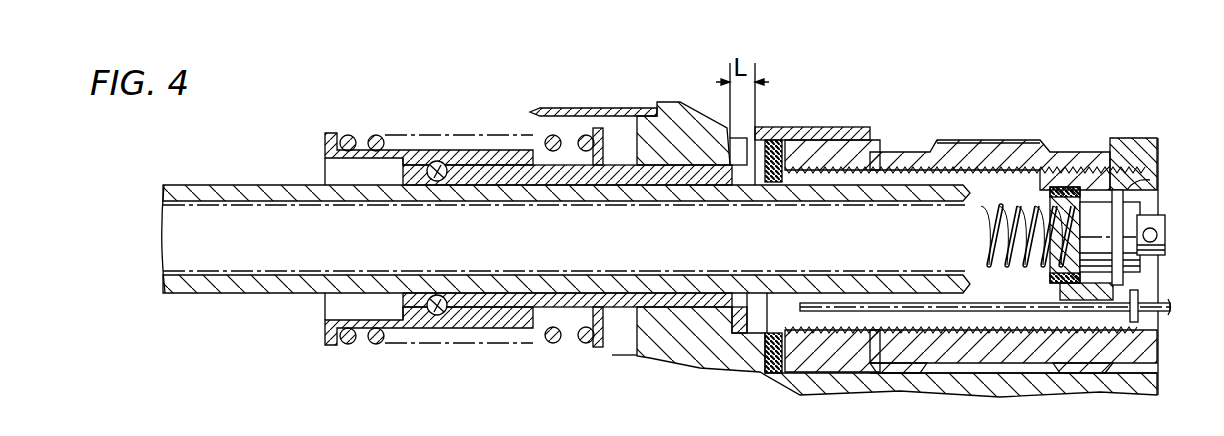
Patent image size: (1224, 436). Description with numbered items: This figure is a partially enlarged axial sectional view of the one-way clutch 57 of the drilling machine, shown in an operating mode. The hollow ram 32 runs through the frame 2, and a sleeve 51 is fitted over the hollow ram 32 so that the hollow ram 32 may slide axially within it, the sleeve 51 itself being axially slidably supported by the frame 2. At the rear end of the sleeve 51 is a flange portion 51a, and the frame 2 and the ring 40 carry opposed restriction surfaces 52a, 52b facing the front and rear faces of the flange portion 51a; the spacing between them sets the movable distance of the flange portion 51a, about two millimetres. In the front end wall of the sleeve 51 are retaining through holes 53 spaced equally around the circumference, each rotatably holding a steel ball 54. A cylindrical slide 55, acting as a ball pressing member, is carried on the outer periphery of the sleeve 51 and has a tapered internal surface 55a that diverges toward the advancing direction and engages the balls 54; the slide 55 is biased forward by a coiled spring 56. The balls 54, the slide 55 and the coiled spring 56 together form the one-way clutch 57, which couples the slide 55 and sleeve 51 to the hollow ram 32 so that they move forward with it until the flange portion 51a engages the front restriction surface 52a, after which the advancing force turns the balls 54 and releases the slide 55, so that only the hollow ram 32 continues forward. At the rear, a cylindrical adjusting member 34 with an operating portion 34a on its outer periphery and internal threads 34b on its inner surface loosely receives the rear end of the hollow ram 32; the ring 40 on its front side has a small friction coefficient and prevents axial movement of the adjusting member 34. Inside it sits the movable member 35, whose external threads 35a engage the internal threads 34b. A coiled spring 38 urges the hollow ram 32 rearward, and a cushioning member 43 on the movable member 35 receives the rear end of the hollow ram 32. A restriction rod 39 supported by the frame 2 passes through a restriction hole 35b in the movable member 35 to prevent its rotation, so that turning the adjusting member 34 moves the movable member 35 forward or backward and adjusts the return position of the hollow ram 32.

The frame 2 is at (652, 125).
The hollow ram 32 is at (888, 188).
The adjusting member 34 is at (1009, 130).
The operating portion 34a is at (958, 140).
The internal threads 34b is at (1133, 186).
The movable member 35 is at (1103, 193).
The external threads 35a is at (1100, 172).
The restriction hole 35b is at (1053, 307).
The coiled spring 38 is at (1004, 268).
The restriction rod 39 is at (935, 312).
The ring 40 is at (773, 371).
The cushioning member 43 is at (1045, 186).
The sleeve 51 is at (512, 178).
The flange portion 51a is at (745, 336).
The restriction surface 52a is at (737, 158).
The restriction surface 52b is at (767, 150).
The retaining through holes 53 is at (441, 181).
The steel ball 54 is at (437, 160).
The slide 55 is at (356, 157).
The tapered internal surface 55a is at (465, 178).
The coiled spring 56 is at (376, 135).
The one-way clutch 57 is at (417, 112).